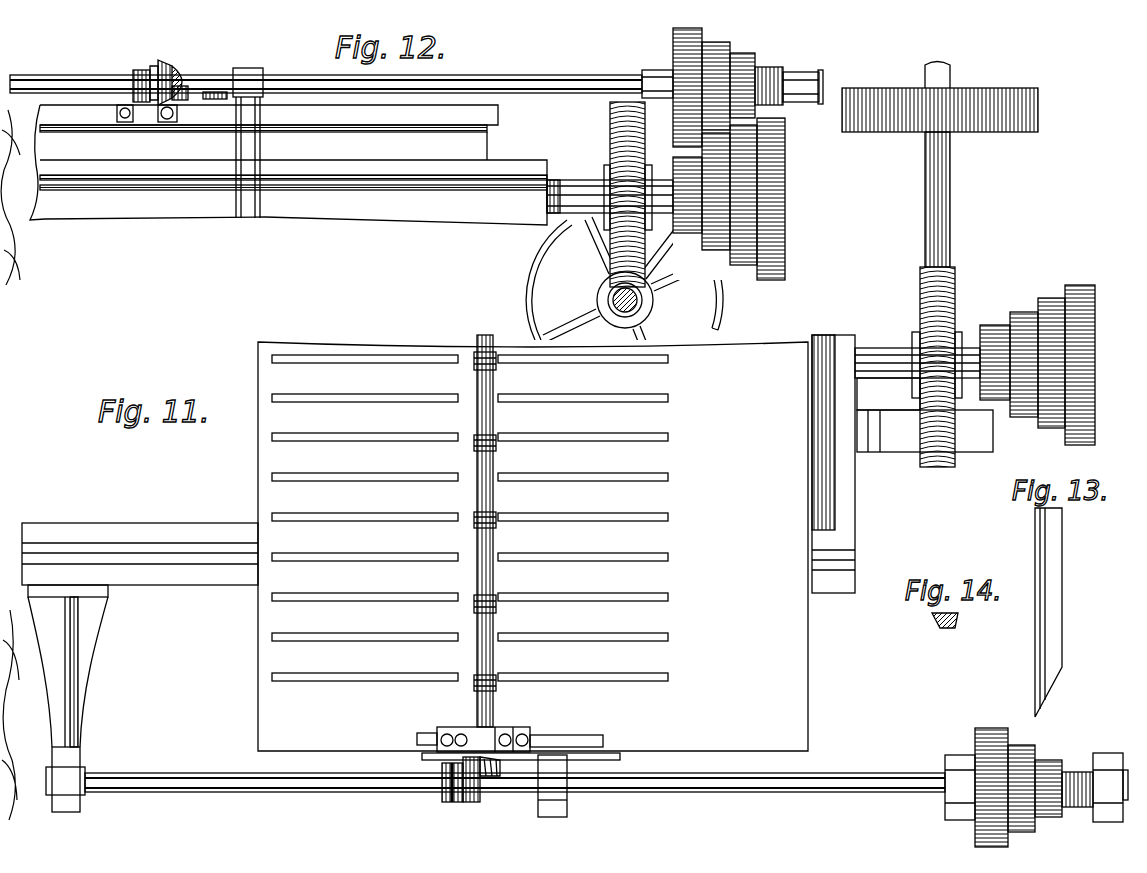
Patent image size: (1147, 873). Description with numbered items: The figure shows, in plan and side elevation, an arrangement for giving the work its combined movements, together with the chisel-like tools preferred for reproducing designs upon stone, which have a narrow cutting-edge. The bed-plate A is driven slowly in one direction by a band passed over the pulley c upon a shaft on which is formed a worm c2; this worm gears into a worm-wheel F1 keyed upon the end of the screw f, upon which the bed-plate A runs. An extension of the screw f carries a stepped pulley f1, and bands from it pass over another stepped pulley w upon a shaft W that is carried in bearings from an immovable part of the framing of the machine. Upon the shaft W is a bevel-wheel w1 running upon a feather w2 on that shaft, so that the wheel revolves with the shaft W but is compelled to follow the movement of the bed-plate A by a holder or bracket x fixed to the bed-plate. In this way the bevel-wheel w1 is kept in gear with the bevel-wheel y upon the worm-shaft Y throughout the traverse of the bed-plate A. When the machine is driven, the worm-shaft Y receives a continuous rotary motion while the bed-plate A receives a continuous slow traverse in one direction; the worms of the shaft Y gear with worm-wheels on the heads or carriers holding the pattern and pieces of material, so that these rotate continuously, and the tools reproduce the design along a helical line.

In FIG. 12, the bed-plate A is at (288, 146).
In FIG. 11, the bed-plate A is at (438, 573).
In FIG. 12, the shaft W is at (326, 75).
In FIG. 11, the shaft W is at (515, 774).
In FIG. 12, the stepped pulley w is at (667, 83).
In FIG. 11, the stepped pulley w is at (986, 787).
In FIG. 12, the bevel-wheel w1 is at (162, 66).
In FIG. 11, the bevel-wheel w1 is at (478, 803).
In FIG. 12, the feather w2 is at (213, 78).
In FIG. 11, the feather w2 is at (218, 790).
In FIG. 12, the holder or bracket x is at (151, 106).
In FIG. 11, the holder or bracket x is at (453, 805).
In FIG. 12, the bevel-wheel y is at (181, 86).
In FIG. 11, the worm-shaft Y is at (493, 373).
In FIG. 12, the screw f is at (610, 193).
In FIG. 11, the screw f is at (924, 397).
In FIG. 12, the stepped pulley f1 is at (729, 199).
In FIG. 11, the stepped pulley f1 is at (1037, 365).
In FIG. 12, the worm-wheel F1 is at (628, 194).
In FIG. 11, the worm-wheel F1 is at (937, 367).
In FIG. 12, the pulley c is at (629, 300).
In FIG. 11, the pulley c is at (940, 165).
In FIG. 12, the worm c2 is at (647, 308).